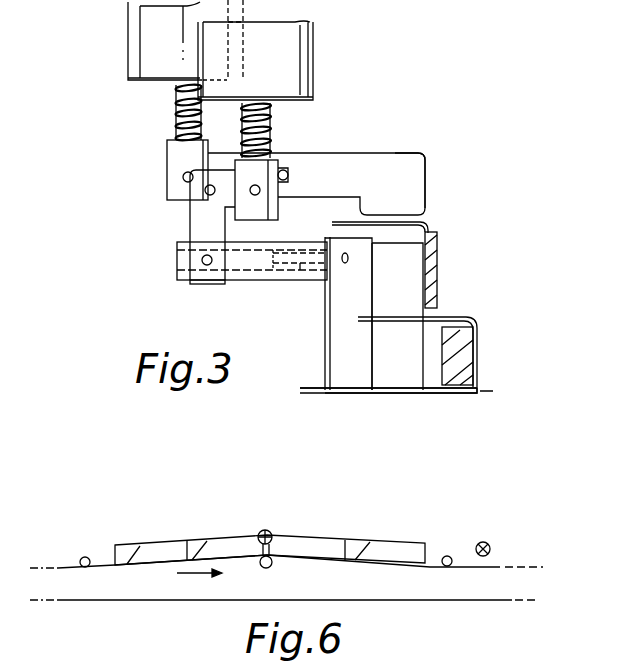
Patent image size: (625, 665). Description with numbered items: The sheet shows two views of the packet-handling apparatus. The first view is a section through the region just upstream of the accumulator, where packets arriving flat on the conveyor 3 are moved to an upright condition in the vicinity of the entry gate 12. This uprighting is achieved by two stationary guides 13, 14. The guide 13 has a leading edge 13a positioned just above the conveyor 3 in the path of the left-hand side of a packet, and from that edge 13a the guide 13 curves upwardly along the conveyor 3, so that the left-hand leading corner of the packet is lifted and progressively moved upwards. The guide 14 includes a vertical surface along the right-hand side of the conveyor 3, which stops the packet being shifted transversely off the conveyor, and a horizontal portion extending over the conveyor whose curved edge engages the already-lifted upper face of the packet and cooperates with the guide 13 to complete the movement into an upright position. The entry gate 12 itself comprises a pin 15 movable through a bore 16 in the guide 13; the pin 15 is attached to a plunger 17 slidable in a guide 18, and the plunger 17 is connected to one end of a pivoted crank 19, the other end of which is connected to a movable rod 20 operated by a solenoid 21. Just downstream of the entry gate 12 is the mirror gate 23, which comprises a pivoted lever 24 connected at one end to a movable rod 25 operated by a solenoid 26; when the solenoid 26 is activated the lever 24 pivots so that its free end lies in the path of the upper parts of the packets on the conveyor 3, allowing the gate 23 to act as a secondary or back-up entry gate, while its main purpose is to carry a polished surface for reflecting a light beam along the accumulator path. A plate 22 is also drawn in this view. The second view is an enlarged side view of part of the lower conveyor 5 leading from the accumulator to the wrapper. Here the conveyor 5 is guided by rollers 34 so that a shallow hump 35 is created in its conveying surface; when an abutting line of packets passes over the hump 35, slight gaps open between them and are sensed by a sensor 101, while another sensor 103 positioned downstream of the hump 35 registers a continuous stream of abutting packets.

In FIG. 3, the conveyor 3 is at (330, 395).
In FIG. 3, the entry gate 12 is at (282, 285).
In FIG. 3, the stationary guide 13 is at (335, 300).
In FIG. 3, the leading edge 13a is at (363, 380).
In FIG. 3, the stationary guide 14 is at (453, 320).
In FIG. 3, the pin 15 is at (302, 265).
In FIG. 3, the bore 16 is at (345, 263).
In FIG. 3, the plunger 17 is at (238, 270).
In FIG. 3, the guide 18 is at (183, 282).
In FIG. 3, the pivoted crank 19 is at (202, 215).
In FIG. 3, the movable rod 20 is at (262, 127).
In FIG. 3, the solenoid 21 is at (297, 62).
In FIG. 3, the plate 22 is at (440, 250).
In FIG. 3, the mirror gate 23 is at (347, 151).
In FIG. 3, the pivoted lever 24 is at (412, 168).
In FIG. 3, the movable rod 25 is at (183, 105).
In FIG. 3, the solenoid 26 is at (158, 52).
In FIG. 6, the rollers 34 is at (87, 556).
In FIG. 6, the hump 35 is at (278, 553).
In FIG. 6, the sensor 101 is at (262, 532).
In FIG. 6, the sensor 103 is at (493, 545).
In FIG. 6, the conveyor 5 is at (498, 565).